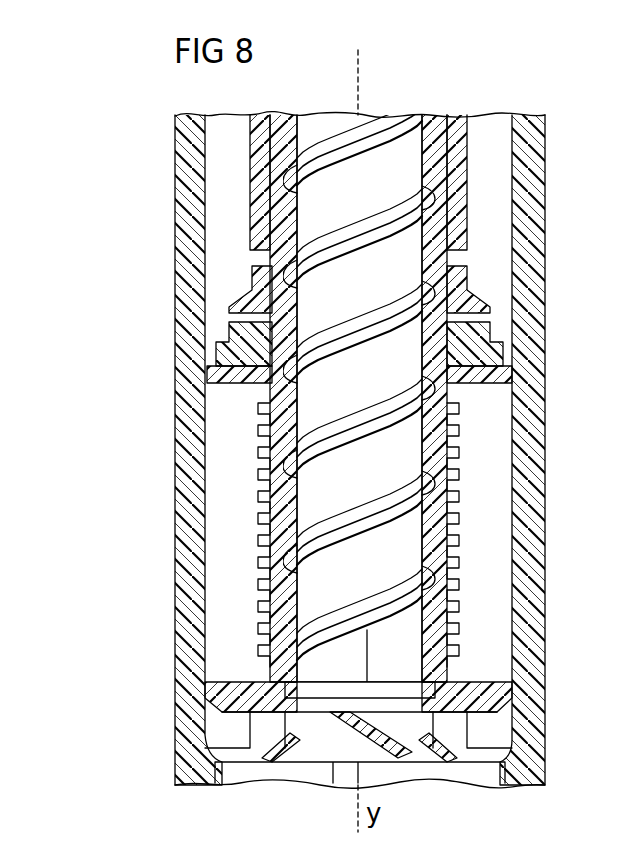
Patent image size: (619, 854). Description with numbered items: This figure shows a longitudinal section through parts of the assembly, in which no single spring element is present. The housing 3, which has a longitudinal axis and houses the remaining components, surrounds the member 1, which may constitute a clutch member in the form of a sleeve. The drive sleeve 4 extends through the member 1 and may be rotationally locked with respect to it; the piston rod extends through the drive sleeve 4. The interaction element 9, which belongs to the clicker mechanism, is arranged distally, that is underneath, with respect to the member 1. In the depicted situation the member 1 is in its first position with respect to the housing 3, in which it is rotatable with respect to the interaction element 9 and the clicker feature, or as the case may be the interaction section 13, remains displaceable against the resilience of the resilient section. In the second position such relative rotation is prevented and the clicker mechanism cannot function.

The member 1 is at (463, 180).
The housing 3 is at (537, 291).
The drive sleeve 4 is at (443, 222).
The interaction element 9 is at (497, 357).
The interaction section 13 is at (250, 285).